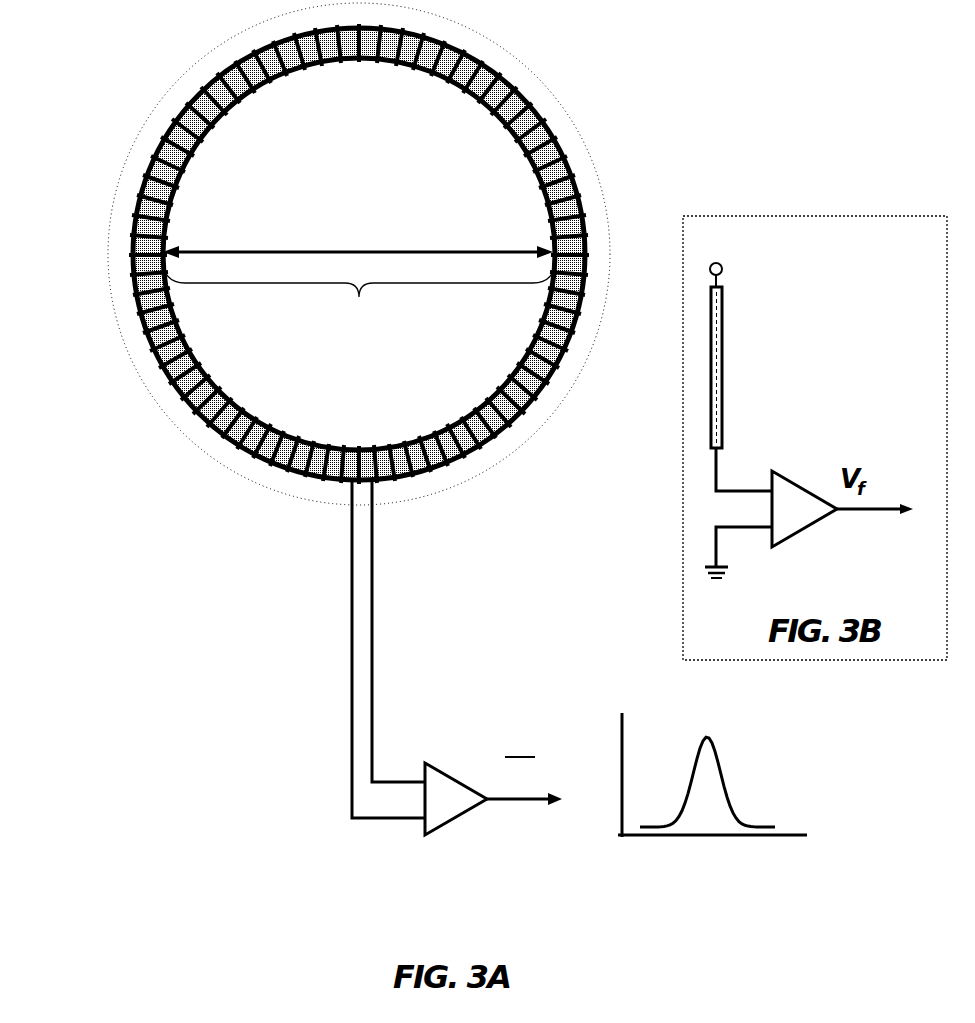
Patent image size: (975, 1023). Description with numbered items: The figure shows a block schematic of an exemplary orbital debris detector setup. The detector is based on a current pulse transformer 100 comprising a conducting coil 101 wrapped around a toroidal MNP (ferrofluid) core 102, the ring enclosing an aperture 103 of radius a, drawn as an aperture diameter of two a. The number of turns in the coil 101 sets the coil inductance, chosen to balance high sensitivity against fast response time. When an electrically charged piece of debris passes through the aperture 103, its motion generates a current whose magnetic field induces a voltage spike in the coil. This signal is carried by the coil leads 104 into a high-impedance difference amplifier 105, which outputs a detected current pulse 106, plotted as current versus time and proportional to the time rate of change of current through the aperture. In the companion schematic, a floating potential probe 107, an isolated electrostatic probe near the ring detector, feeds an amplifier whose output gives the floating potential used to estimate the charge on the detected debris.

In FIG. 3A, the current pulse transformer 100 is at (400, 254).
In FIG. 3A, the conducting coil 101 is at (313, 254).
In FIG. 3A, the MNP toroidal core 102 is at (193, 397).
In FIG. 3A, the aperture 103 is at (359, 276).
In FIG. 3A, the coil leads 104 is at (363, 648).
In FIG. 3A, the amplifier 105 is at (472, 811).
In FIG. 3A, the detected current pulse 106 is at (721, 791).
In FIG. 3B, the floating potential probe 107 is at (748, 332).